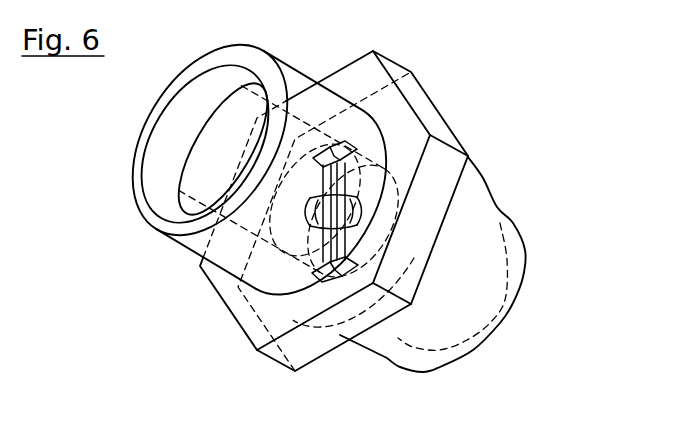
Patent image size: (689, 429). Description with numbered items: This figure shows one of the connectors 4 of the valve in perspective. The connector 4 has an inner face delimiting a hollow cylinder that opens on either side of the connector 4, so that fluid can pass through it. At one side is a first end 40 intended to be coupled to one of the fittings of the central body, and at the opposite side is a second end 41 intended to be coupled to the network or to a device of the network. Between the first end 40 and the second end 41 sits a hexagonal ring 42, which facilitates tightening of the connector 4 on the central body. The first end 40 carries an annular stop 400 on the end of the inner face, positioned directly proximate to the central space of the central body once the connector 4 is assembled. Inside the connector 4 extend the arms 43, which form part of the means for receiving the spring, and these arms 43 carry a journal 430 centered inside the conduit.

The connector 4 is at (528, 79).
The first end 40 is at (176, 252).
The annular stop 400 is at (171, 152).
The second end 41 is at (374, 375).
The hexagonal ring 42 is at (362, 75).
The arm 43 is at (340, 233).
The journal 430 is at (313, 223).